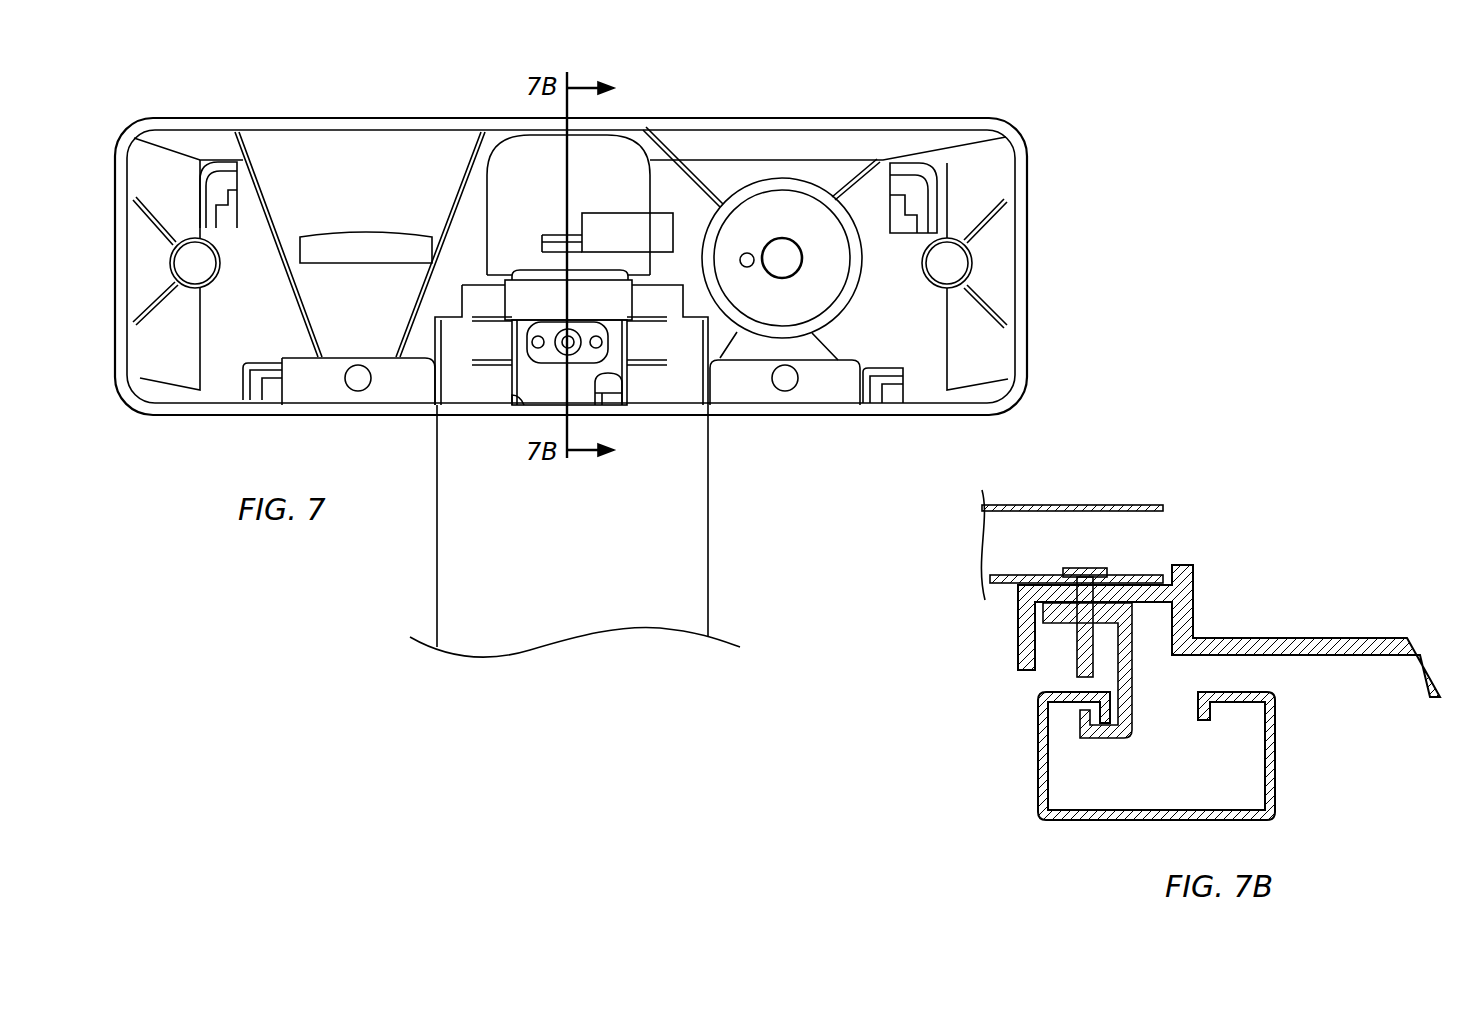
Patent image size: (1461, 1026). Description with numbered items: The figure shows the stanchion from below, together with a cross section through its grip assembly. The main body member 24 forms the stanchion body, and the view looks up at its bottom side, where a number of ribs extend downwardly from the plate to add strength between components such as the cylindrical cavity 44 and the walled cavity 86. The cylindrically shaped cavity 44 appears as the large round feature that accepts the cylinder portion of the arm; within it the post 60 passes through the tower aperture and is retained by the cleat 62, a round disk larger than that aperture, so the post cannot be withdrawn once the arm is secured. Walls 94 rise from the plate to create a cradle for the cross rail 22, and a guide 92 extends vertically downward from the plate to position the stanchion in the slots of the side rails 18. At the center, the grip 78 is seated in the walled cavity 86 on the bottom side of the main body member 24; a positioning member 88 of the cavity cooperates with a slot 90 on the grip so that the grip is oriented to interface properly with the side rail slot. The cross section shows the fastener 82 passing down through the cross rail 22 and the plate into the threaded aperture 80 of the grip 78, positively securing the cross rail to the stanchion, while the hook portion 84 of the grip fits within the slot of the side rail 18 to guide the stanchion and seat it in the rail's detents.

In FIG. 7B, the side rail 18 is at (1275, 757).
In FIG. 7B, the cross rail 22 is at (1122, 505).
In FIG. 7, the main body member 24 is at (1028, 218).
In FIG. 7B, the main body member 24 is at (1343, 640).
In FIG. 7, the cylindrically shaped cavity 44 is at (900, 222).
In FIG. 7, the post 60 is at (783, 262).
In FIG. 7, the cleat 62 is at (780, 215).
In FIG. 7, the grip 78 is at (548, 388).
In FIG. 7, the threaded aperture 80 is at (553, 347).
In FIG. 7B, the fastener 82 is at (1097, 568).
In FIG. 7, the hook portion 84 is at (552, 293).
In FIG. 7B, the hook portion 84 is at (1135, 670).
In FIG. 7, the walled cavity 86 is at (528, 397).
In FIG. 7, the positioning member 88 is at (602, 398).
In FIG. 7, the slot 90 is at (630, 397).
In FIG. 7, the guide 92 is at (362, 240).
In FIG. 7, the walls 94 is at (432, 168).